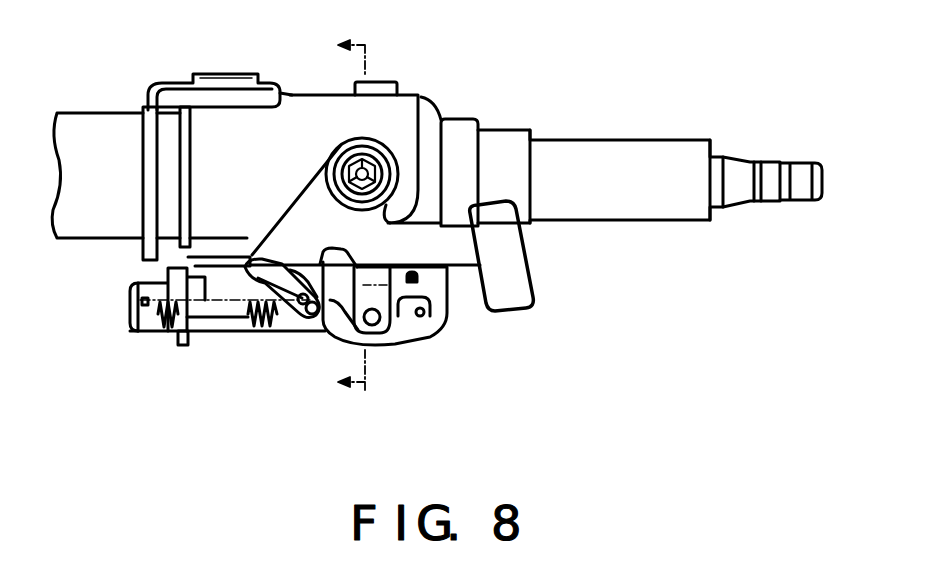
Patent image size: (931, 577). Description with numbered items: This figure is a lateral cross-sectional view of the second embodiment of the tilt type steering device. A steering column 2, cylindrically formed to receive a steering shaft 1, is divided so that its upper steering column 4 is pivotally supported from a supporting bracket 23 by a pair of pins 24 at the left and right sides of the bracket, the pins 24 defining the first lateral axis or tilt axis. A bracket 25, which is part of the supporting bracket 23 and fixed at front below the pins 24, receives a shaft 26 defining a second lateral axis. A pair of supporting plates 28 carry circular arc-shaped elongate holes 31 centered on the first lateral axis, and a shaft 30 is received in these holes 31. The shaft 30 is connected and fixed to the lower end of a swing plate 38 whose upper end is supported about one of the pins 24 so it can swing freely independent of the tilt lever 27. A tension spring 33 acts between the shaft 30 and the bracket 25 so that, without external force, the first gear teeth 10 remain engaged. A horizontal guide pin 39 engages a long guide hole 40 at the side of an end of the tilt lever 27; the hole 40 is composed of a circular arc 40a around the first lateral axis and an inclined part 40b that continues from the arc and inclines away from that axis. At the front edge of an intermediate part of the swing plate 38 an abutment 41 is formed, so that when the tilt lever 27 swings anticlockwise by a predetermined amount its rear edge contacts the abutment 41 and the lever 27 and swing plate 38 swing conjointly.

The steering shaft 1 is at (800, 170).
The steering column 2 is at (86, 128).
The upper steering column 4 is at (440, 122).
The first gear teeth 10 is at (351, 213).
The supporting bracket 23 is at (287, 107).
The pins 24 is at (370, 162).
The bracket 25 is at (268, 285).
The shaft 26 is at (258, 316).
The tilt lever 27 is at (462, 258).
The supporting plates 28 is at (455, 318).
The shaft 30 is at (397, 325).
The elongate holes 31 is at (437, 323).
The tension spring 33 is at (262, 323).
The swing plate 38 is at (375, 343).
The guide pin 39 is at (322, 335).
The long guide hole 40 is at (205, 340).
The circular arc 40a is at (260, 270).
The inclined part 40b is at (299, 330).
The abutment 41 is at (326, 255).